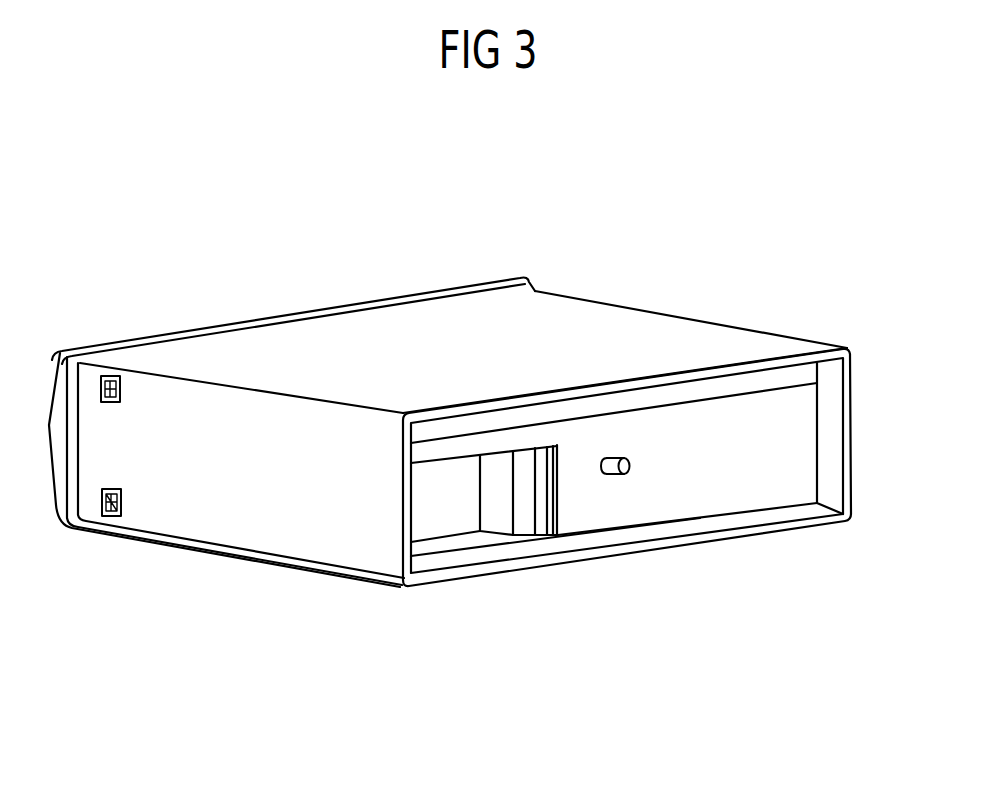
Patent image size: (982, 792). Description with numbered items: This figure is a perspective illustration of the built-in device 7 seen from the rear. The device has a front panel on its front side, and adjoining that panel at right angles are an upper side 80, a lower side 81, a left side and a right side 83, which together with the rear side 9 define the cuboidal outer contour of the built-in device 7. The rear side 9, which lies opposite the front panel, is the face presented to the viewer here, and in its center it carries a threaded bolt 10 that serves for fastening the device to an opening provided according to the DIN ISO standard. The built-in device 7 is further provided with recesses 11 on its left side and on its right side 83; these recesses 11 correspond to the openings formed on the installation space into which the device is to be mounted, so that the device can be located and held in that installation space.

The built-in device 7 is at (682, 278).
The rear side 9 is at (793, 412).
The threaded bolt 10 is at (611, 477).
The recesses 11 is at (114, 384).
The upper side 80 is at (402, 330).
The lower side 81 is at (501, 612).
The right side 83 is at (273, 522).